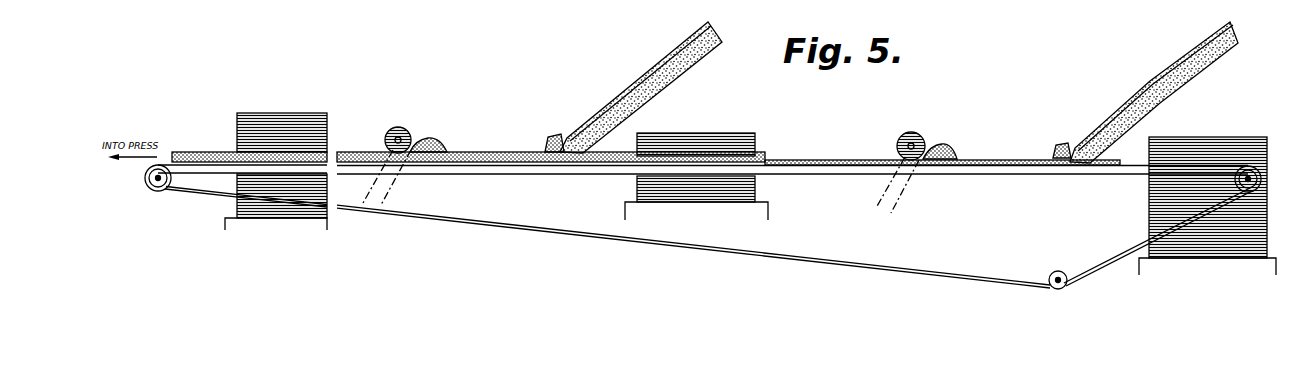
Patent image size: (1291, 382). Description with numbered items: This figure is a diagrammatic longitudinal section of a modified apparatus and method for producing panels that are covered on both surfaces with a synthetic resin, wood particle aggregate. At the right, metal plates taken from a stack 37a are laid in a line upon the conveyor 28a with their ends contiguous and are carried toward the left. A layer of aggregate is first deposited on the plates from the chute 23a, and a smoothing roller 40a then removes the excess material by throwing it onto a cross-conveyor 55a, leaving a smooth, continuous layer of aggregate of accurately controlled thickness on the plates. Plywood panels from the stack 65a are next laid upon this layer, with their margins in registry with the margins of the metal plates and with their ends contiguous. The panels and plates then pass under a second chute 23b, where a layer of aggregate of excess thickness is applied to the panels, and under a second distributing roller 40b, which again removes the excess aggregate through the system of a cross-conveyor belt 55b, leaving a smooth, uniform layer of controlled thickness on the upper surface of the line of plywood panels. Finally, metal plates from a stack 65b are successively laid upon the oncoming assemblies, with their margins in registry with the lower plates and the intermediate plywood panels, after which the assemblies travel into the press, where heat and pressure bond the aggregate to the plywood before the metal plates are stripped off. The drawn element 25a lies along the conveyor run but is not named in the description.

The chute 23a is at (1074, 146).
The second chute 23b is at (566, 132).
The conveyor support plate 25a is at (1012, 170).
The conveyor 28a is at (832, 167).
The stack of metal plates 37a is at (1197, 134).
The smoothing roller 40a is at (904, 134).
The second distributing roller 40b is at (396, 128).
The cross-conveyor 55a is at (941, 148).
The cross-conveyor belt 55b is at (428, 146).
The stack of plywood panels 65a is at (727, 130).
The stack of metal plates 65b is at (282, 110).